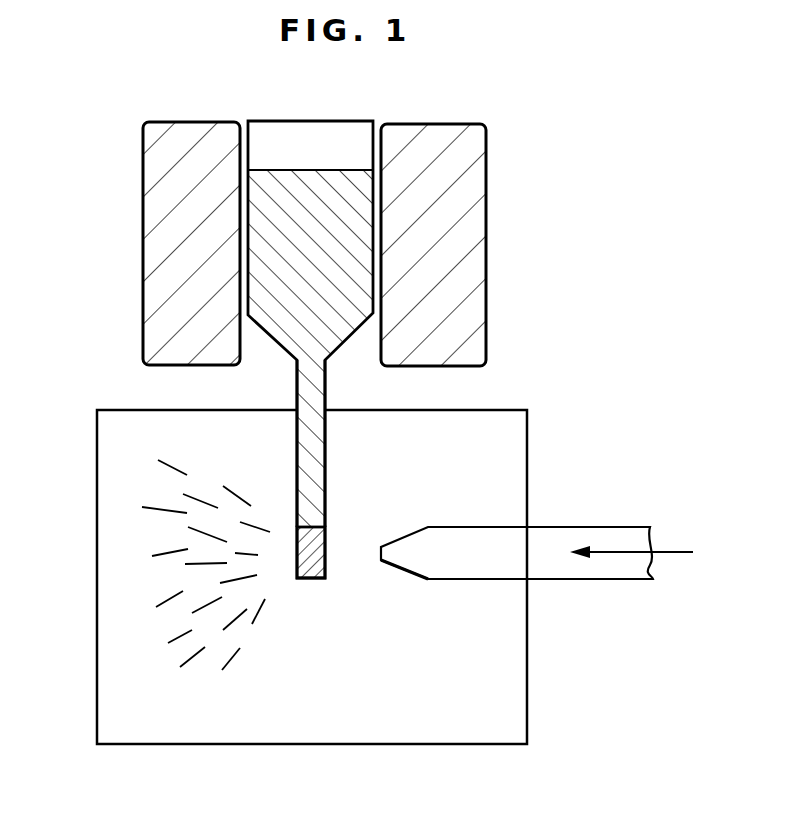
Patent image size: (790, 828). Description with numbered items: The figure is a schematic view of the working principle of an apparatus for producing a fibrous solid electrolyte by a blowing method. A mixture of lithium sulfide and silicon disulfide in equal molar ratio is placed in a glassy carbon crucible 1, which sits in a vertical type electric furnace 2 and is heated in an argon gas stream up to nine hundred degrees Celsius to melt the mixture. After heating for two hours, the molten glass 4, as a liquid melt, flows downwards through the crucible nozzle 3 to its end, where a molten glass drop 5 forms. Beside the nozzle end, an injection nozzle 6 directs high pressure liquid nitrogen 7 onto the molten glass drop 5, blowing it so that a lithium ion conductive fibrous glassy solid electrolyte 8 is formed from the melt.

The glassy carbon crucible 1 is at (263, 145).
The electric furnace 2 is at (486, 268).
The crucible nozzle 3 is at (325, 469).
The molten glass 4 is at (331, 196).
The molten glass drop 5 is at (325, 561).
The injection nozzle 6 is at (607, 579).
The high pressure liquid nitrogen 7 is at (643, 554).
The fibrous glassy solid electrolyte 8 is at (152, 507).